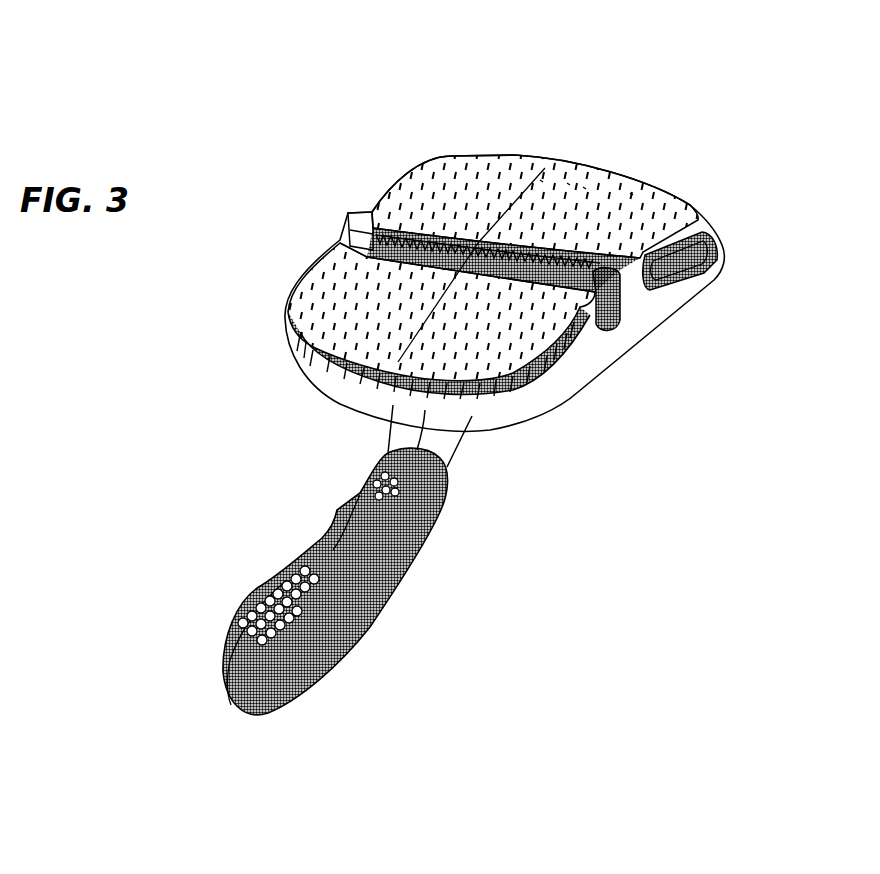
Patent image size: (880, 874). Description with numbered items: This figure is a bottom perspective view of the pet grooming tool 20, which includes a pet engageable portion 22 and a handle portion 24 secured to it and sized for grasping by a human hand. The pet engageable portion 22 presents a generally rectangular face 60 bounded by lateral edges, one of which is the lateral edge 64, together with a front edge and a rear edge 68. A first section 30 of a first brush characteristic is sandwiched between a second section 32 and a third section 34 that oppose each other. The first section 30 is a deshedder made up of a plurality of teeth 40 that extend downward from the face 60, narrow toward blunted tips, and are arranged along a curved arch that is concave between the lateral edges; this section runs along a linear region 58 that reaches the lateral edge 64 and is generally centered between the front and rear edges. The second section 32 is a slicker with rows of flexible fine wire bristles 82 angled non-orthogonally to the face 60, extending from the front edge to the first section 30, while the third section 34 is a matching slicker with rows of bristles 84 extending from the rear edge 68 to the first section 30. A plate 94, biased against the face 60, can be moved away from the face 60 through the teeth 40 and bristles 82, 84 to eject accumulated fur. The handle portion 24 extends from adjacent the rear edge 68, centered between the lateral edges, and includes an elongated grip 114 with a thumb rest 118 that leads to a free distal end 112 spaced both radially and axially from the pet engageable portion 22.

The pet grooming tool 20 is at (722, 104).
The pet engageable portion 22 is at (700, 247).
The handle portion 24 is at (350, 640).
The first section 30 is at (320, 235).
The second section 32 is at (647, 200).
The third section 34 is at (302, 300).
The teeth 40 is at (411, 236).
The linear region 58 is at (345, 211).
The face 60 is at (488, 156).
The lateral edge 64 is at (562, 390).
The rear edge 68 is at (487, 420).
The bristles 82 is at (540, 180).
The bristles 84 is at (303, 327).
The plate 94 is at (630, 193).
The distal end 112 is at (233, 715).
The grip 114 is at (413, 562).
The thumb rest 118 is at (335, 507).